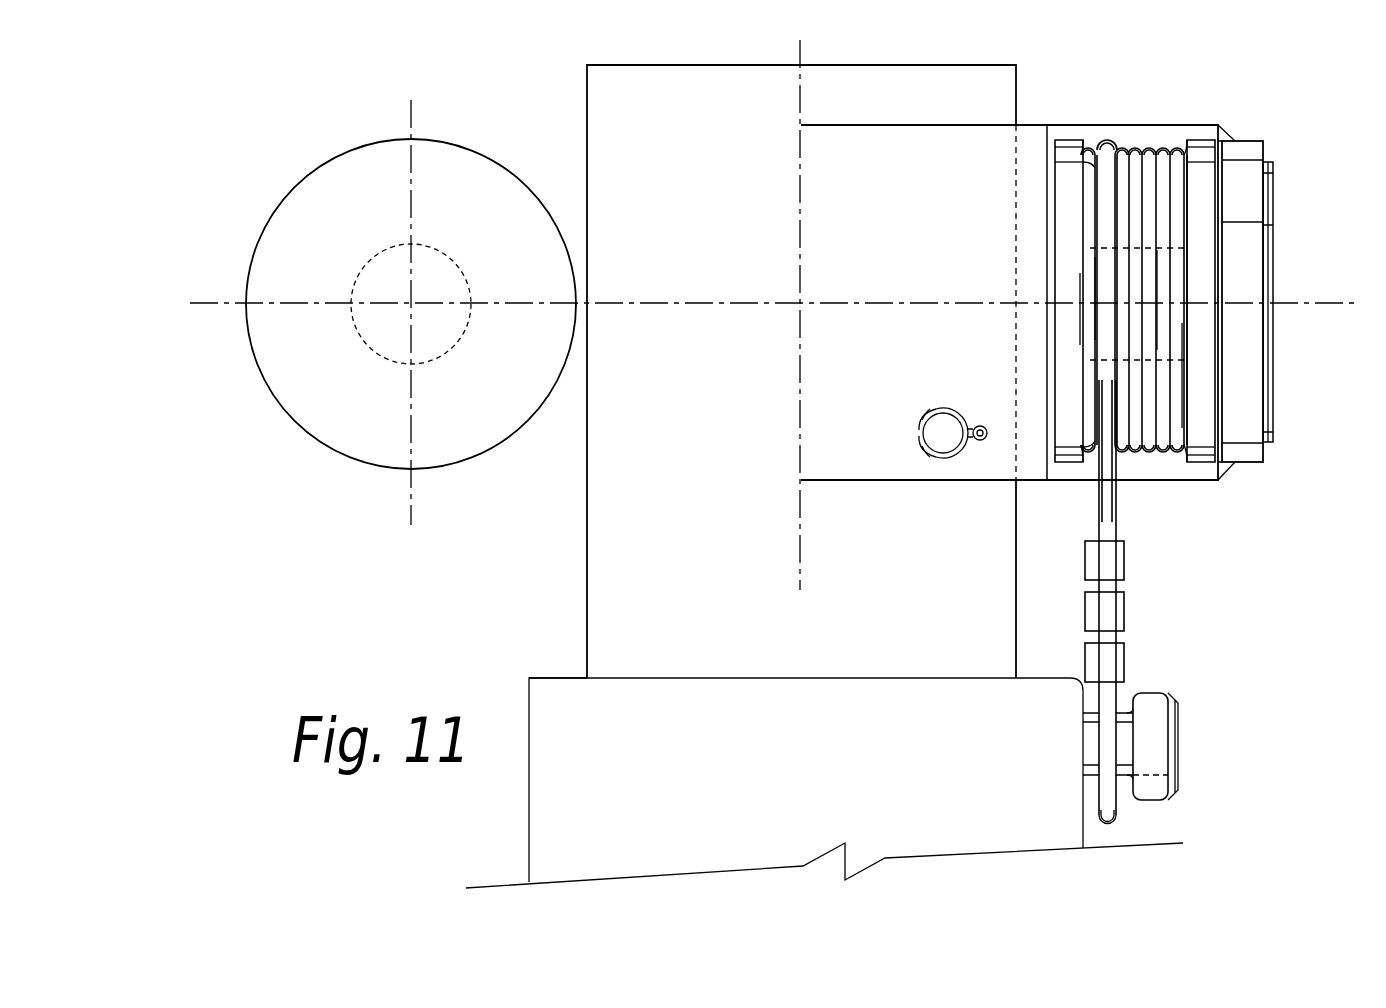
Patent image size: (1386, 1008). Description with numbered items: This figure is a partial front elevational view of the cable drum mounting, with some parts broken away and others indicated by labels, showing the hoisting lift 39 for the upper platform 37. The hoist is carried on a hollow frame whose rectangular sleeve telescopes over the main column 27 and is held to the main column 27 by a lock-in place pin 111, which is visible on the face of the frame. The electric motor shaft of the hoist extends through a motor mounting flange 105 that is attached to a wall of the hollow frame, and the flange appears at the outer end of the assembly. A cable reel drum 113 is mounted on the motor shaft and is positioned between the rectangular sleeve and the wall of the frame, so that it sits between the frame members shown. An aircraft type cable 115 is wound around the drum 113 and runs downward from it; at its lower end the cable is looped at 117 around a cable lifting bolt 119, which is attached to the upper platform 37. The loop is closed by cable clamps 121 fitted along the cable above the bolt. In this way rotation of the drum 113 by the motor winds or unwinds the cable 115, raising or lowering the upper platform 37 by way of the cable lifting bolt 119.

The main column 27 is at (617, 111).
The upper platform 37 is at (847, 712).
The hoisting lift 39 is at (1215, 104).
The motor mounting flange 105 is at (1268, 316).
The lock-in place pin 111 is at (947, 425).
The cable reel drum 113 is at (1070, 150).
The aircraft type cable 115 is at (1108, 502).
The loop 117 is at (1112, 815).
The cable lifting bolt 119 is at (1153, 728).
The cable clamps 121 is at (1120, 560).